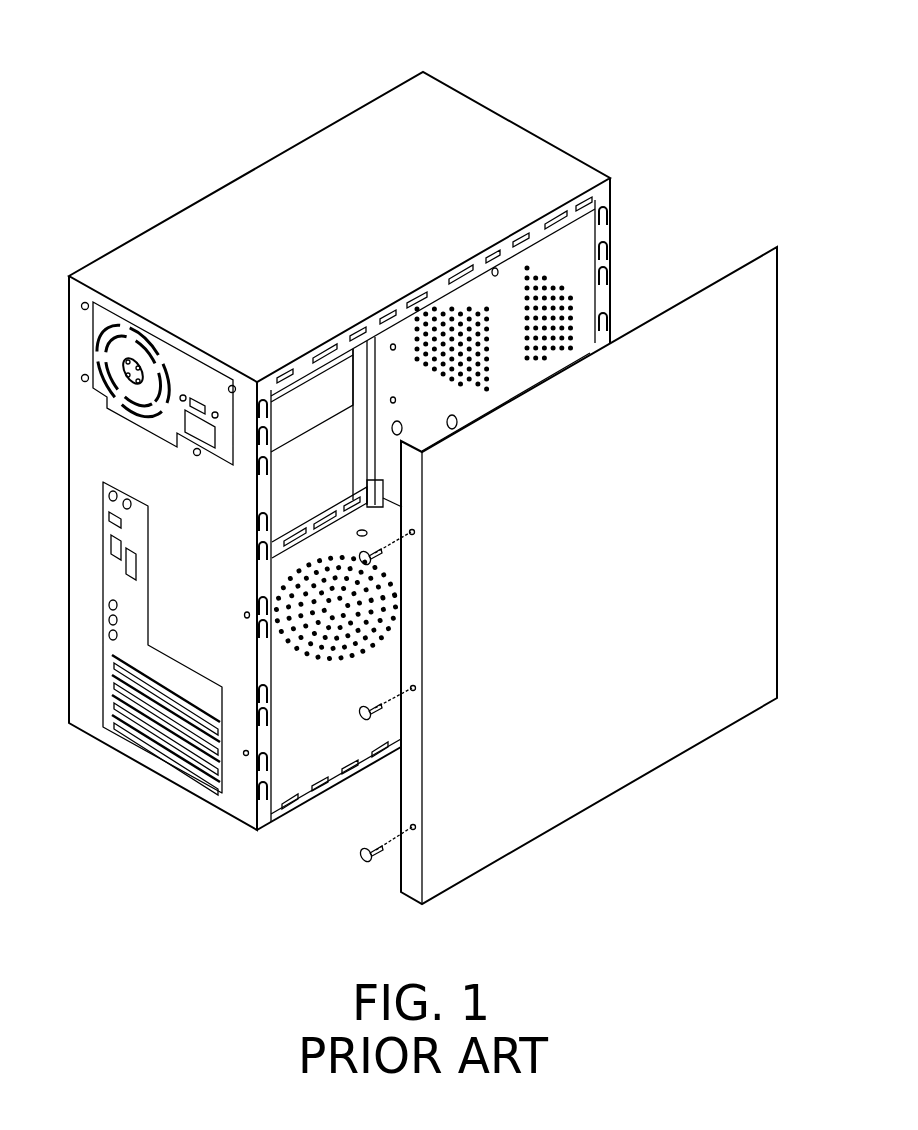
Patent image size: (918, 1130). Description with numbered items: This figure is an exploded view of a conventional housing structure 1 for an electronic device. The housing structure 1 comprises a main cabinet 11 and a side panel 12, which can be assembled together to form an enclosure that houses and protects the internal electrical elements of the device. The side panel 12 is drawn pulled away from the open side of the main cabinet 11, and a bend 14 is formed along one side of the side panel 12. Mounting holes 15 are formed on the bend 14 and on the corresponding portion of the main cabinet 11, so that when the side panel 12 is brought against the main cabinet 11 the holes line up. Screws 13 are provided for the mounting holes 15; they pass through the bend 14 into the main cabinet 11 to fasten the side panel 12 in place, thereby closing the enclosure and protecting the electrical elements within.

The housing structure 1 is at (140, 33).
The main cabinet 11 is at (481, 147).
The side panel 12 is at (708, 328).
The screws 13 is at (358, 855).
The bend 14 is at (410, 594).
The mounting holes 15 is at (413, 827).